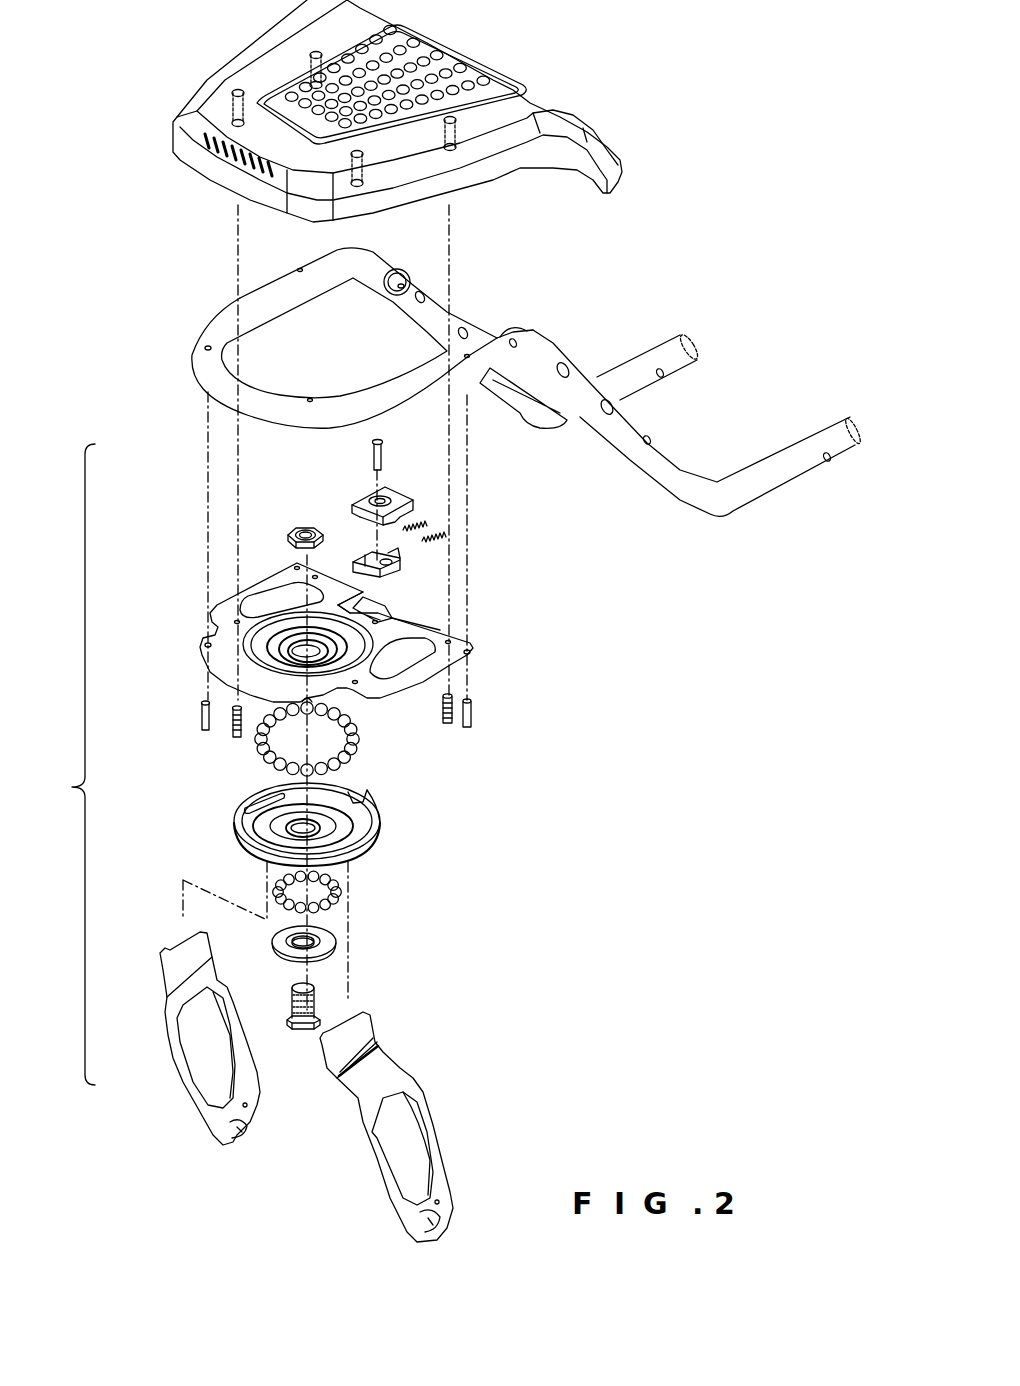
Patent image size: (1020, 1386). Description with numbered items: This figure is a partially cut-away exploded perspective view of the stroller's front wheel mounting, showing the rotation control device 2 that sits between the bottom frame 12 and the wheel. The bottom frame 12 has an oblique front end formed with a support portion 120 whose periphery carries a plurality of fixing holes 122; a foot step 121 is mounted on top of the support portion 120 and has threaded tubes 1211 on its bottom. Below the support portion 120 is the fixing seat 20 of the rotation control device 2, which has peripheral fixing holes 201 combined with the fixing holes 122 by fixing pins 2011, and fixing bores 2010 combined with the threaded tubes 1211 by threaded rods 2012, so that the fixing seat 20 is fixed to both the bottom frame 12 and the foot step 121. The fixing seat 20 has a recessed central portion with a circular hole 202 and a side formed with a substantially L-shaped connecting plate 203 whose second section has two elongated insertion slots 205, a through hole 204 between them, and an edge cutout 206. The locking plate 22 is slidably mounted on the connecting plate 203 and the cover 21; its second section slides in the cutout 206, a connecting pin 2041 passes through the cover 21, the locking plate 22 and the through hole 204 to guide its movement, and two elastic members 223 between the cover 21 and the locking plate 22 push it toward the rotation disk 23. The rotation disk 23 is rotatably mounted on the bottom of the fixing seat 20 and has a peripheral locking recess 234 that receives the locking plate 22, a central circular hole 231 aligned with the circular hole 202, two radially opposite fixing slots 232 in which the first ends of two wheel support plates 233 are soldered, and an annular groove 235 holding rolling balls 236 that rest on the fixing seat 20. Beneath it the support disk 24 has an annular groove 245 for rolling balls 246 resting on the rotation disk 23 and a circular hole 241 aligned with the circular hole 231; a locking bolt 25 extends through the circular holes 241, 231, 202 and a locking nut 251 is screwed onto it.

The bottom frame 12 is at (718, 497).
The support portion 120 is at (230, 315).
The foot step 121 is at (575, 125).
The threaded tubes 1211 is at (228, 100).
The fixing holes 122 is at (206, 345).
The rotation control device 2 is at (68, 764).
The fixing seat 20 is at (222, 661).
The fixing holes 201 is at (206, 640).
The fixing bores 2010 is at (237, 620).
The fixing pins 2011 is at (471, 712).
The threaded rods 2012 is at (238, 730).
The circular hole 202 is at (303, 650).
The connecting plate 203 is at (400, 620).
The through hole 204 is at (469, 656).
The connecting pin 2041 is at (383, 455).
The insertion slots 205 is at (380, 608).
The cutout 206 is at (398, 616).
The cover 21 is at (395, 498).
The locking plate 22 is at (360, 560).
The elastic members 223 is at (445, 535).
The rotation disk 23 is at (362, 831).
The circular hole 231 is at (288, 833).
The fixing slots 232 is at (250, 806).
The wheel support plates 233 is at (407, 1138).
The locking recess 234 is at (355, 796).
The annular groove 235 is at (358, 818).
The rolling balls 236 is at (350, 742).
The support disk 24 is at (330, 953).
The circular hole 241 is at (318, 941).
The annular groove 245 is at (335, 944).
The rolling balls 246 is at (340, 900).
The locking bolt 25 is at (320, 1003).
The locking nut 251 is at (300, 527).